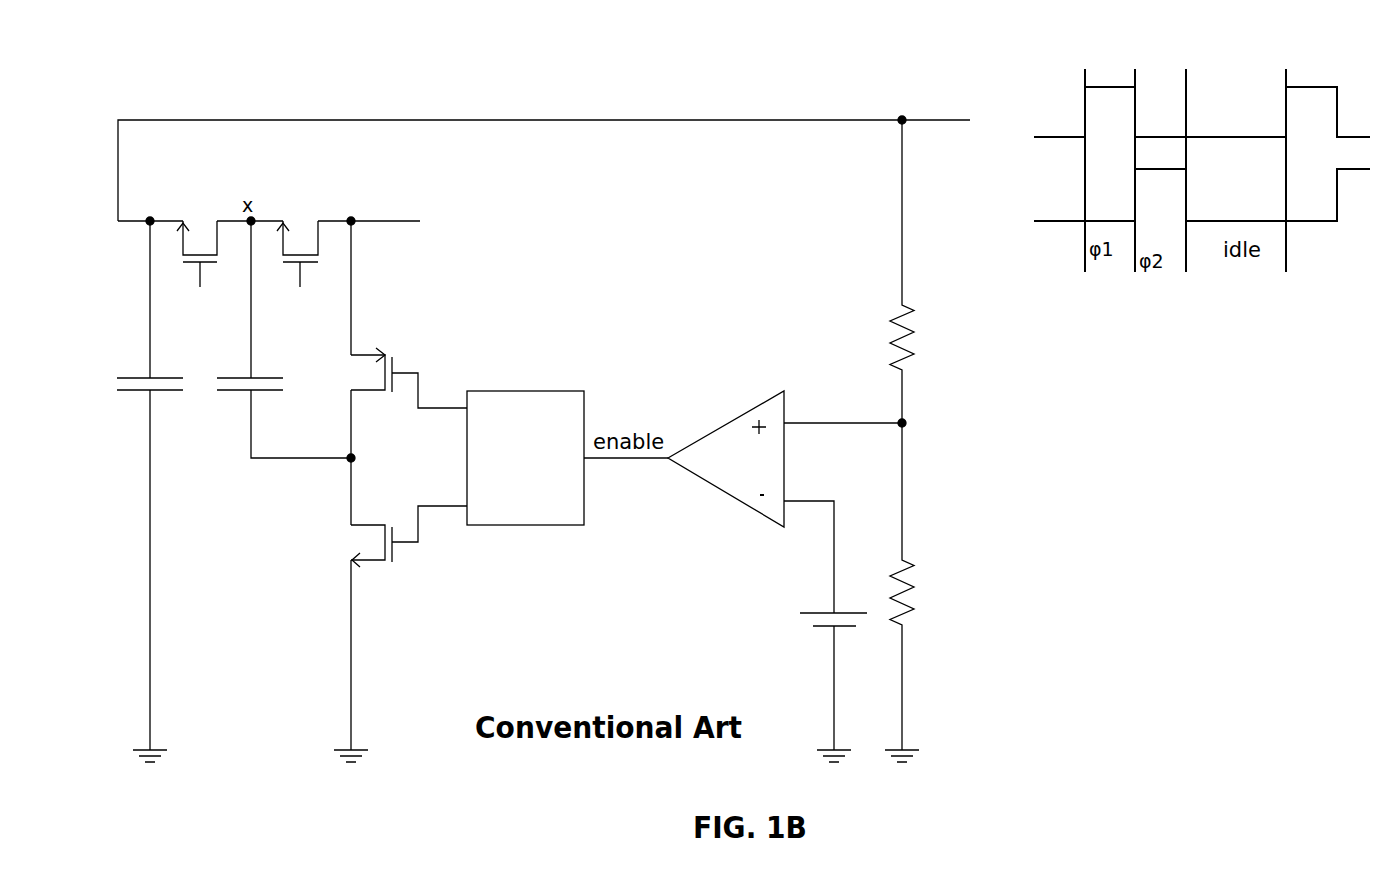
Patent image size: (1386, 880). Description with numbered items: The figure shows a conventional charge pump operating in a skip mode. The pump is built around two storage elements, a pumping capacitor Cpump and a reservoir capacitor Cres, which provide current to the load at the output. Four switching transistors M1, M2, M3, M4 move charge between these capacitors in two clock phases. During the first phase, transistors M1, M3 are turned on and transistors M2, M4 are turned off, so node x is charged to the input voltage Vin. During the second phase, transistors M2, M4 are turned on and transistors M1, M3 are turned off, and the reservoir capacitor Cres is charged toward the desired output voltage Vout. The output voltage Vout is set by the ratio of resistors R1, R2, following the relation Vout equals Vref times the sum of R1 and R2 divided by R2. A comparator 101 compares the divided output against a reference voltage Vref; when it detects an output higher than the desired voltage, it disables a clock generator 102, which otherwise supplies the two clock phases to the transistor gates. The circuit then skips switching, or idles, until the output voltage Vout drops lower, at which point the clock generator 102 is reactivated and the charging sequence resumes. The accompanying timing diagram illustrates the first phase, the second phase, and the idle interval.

The comparator 101 is at (752, 408).
The clock generator 102 is at (547, 391).
The transistor M1 is at (392, 536).
The transistor M2 is at (392, 378).
The transistor M3 is at (297, 248).
The transistor M4 is at (197, 248).
The resistor R1 is at (918, 271).
The resistor R2 is at (918, 586).
The reservoir capacitor Cres is at (144, 485).
The pumping capacitor Cpump is at (274, 339).
The input voltage Vin is at (286, 223).
The output voltage Vout is at (956, 123).
The reference voltage Vref is at (826, 681).